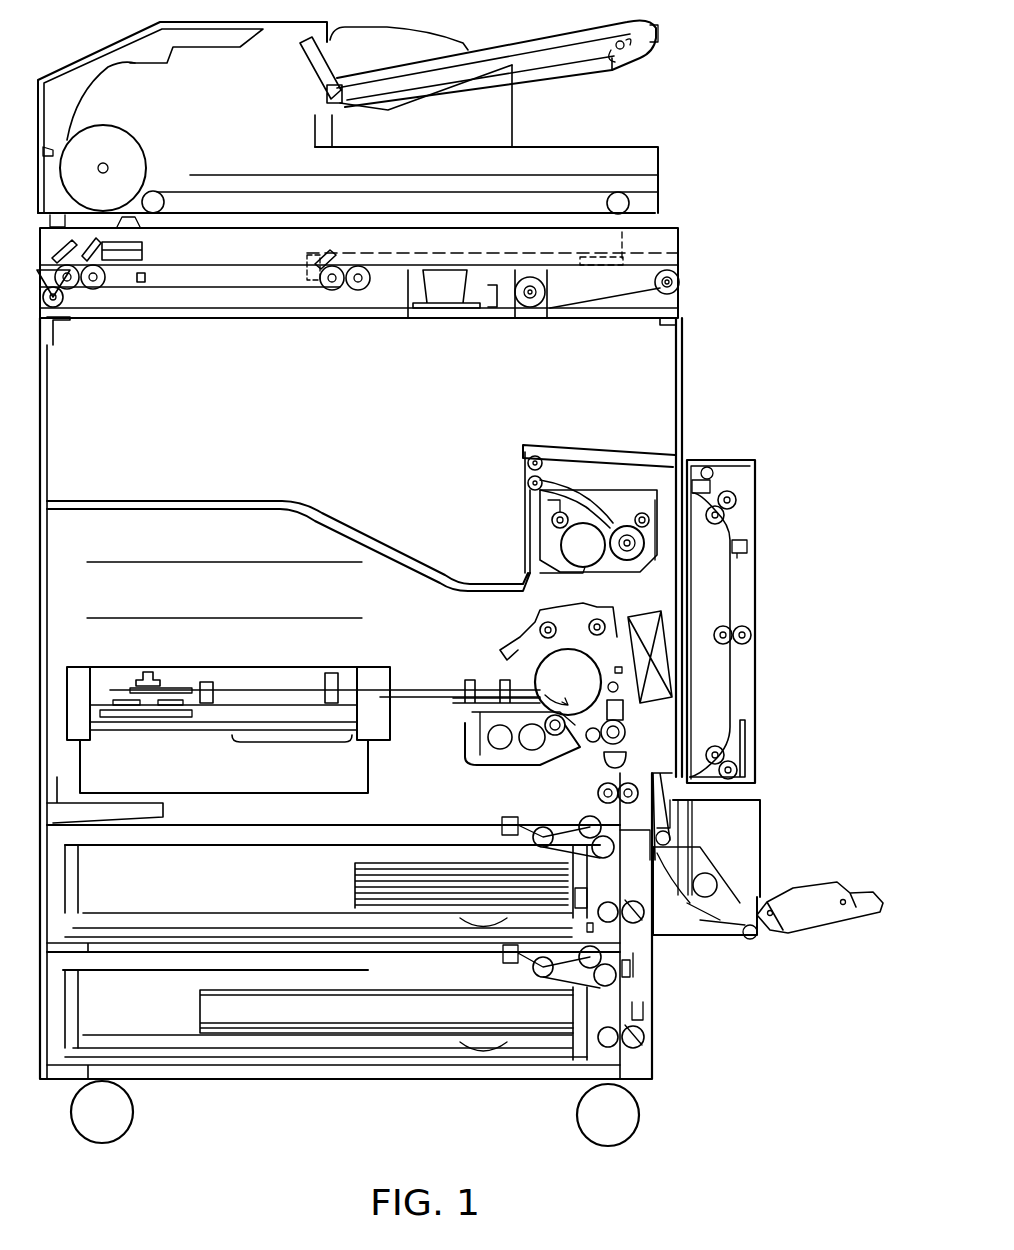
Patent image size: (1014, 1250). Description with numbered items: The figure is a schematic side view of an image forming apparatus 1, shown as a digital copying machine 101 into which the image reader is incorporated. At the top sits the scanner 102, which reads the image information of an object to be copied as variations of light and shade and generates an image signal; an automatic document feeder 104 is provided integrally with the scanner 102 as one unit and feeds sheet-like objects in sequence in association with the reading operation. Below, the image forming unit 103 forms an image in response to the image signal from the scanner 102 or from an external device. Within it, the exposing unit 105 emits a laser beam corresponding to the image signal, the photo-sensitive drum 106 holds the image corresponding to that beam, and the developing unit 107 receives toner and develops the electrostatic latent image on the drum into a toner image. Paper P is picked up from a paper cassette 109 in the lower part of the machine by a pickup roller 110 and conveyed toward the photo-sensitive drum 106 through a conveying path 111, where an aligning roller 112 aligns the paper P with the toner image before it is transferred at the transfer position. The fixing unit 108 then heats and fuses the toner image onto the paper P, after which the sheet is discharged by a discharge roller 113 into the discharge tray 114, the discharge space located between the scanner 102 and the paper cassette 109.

The image forming apparatus 1 is at (770, 124).
The digital copying machine 101 is at (663, 373).
The scanner 102 is at (216, 278).
The image forming unit 103 is at (788, 777).
The automatic document feeder 104 is at (167, 88).
The exposing unit 105 is at (160, 688).
The photo-sensitive drum 106 is at (607, 642).
The developing unit 107 is at (540, 745).
The fixing unit 108 is at (584, 510).
The paper cassette 109 is at (293, 870).
The pickup roller 110 is at (640, 925).
The conveying path 111 is at (627, 807).
The aligning roller 112 is at (592, 742).
The discharge roller 113 is at (528, 463).
The discharge tray 114 is at (281, 500).
The paper P is at (415, 873).